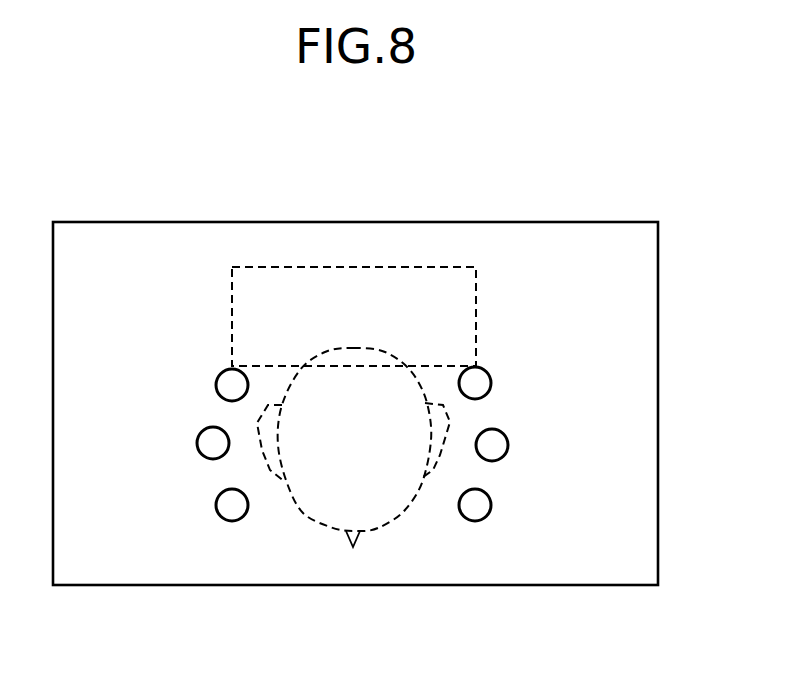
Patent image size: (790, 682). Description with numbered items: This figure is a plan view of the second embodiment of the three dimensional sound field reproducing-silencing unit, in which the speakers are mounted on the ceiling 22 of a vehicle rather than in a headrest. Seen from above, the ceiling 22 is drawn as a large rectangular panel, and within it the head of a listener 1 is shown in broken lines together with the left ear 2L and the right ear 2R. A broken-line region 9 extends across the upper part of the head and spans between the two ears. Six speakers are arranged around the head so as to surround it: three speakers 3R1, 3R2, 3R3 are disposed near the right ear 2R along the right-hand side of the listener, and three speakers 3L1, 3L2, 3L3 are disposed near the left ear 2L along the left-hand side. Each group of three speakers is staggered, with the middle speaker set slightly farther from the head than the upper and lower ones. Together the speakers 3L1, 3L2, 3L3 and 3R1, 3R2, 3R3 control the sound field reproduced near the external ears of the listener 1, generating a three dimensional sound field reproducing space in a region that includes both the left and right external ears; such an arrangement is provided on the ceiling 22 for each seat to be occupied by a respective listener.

The listener 1 is at (307, 513).
The right ear 2R is at (268, 405).
The left ear 2L is at (444, 405).
The head region / headrest area 9 is at (347, 268).
The ceiling 22 is at (607, 232).
The speaker 3R3 is at (216, 381).
The speaker 3R2 is at (200, 443).
The speaker 3R1 is at (218, 508).
The speaker 3L3 is at (493, 383).
The speaker 3L2 is at (509, 445).
The speaker 3L1 is at (492, 505).